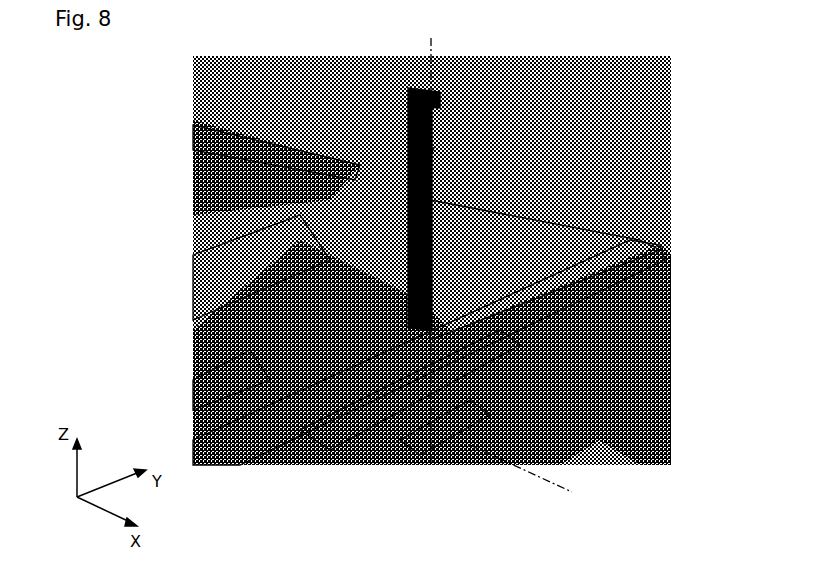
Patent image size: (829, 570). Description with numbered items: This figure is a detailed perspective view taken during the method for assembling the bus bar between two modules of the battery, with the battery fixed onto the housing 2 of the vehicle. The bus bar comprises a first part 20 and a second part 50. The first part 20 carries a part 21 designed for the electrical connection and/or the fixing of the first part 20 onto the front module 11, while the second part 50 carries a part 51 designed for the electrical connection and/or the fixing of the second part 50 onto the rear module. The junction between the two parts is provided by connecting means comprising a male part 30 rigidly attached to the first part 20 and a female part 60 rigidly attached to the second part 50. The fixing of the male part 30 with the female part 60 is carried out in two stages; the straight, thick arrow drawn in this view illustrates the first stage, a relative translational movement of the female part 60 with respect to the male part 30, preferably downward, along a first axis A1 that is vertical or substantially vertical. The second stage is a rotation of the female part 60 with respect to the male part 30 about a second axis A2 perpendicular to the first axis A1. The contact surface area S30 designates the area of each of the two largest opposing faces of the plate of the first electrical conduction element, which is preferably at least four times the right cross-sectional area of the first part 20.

The housing 2 is at (193, 173).
The front module 11 is at (522, 215).
The first part 20 is at (340, 466).
The part for electrical connection and/or fixing 21 is at (193, 393).
The male part 30 is at (412, 466).
The contact surface area S30 is at (446, 466).
The second part 50 is at (450, 185).
The part for electrical connection and/or fixing 51 is at (438, 97).
The female part 60 is at (193, 278).
The first axis A1 is at (444, 251).
The second axis A2 is at (532, 471).